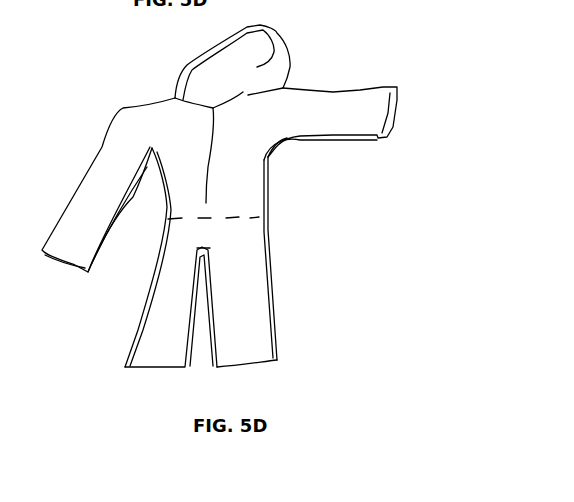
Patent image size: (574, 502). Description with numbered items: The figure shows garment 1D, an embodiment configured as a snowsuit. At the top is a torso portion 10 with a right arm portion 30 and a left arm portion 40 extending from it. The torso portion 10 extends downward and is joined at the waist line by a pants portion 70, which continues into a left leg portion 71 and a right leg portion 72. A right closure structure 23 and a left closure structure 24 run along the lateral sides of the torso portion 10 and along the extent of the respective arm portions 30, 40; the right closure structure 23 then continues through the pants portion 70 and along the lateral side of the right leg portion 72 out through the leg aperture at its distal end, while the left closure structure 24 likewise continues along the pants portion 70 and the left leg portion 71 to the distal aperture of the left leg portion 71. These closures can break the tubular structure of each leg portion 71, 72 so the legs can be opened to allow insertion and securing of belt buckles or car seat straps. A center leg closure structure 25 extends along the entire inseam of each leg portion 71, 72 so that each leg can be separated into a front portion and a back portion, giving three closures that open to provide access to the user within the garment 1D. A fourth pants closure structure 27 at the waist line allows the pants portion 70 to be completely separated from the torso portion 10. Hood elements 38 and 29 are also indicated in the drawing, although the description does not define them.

The garment 1D is at (312, 387).
The torso portion 10 is at (238, 165).
The right closure structure 23 is at (132, 318).
The left closure structure 24 is at (268, 239).
The center leg closure structure 25 is at (187, 327).
The pants closure structure 27 is at (238, 217).
The leader to adjacent figure element 29 is at (80, 0).
The right arm portion 30 is at (110, 157).
The hood 38 is at (270, 48).
The left arm portion 40 is at (333, 110).
The pants portion 70 is at (245, 317).
The left leg portion 71 is at (245, 260).
The right leg portion 72 is at (170, 260).